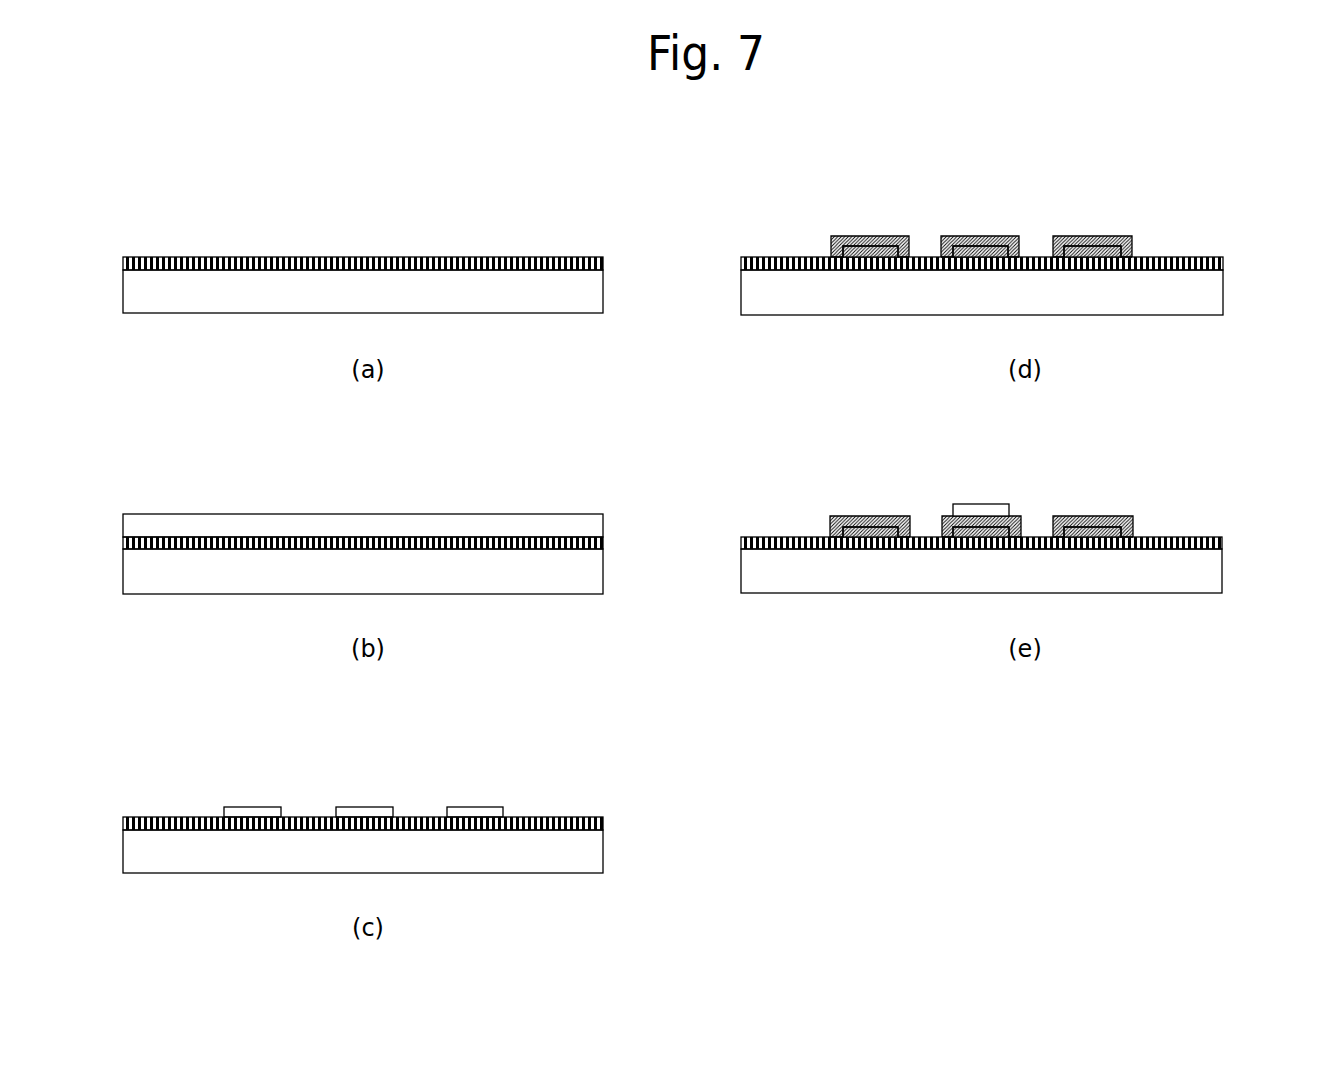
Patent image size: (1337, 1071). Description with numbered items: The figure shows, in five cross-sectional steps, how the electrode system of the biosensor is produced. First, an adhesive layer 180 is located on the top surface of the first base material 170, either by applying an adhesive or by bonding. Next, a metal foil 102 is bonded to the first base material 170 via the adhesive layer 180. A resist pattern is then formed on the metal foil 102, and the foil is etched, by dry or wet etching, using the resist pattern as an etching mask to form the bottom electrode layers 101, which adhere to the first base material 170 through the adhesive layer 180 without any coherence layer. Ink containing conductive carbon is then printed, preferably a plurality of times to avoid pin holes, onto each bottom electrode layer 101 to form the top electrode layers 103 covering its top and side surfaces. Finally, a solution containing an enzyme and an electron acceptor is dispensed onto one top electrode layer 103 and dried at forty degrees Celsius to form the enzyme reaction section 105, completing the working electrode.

The bottom electrode layer 101 is at (252, 807).
The metal foil 102 is at (595, 517).
The top electrode layer 103 is at (890, 236).
The enzyme reaction section 105 is at (978, 504).
The first base material 170 is at (590, 299).
The adhesive layer 180 is at (603, 263).